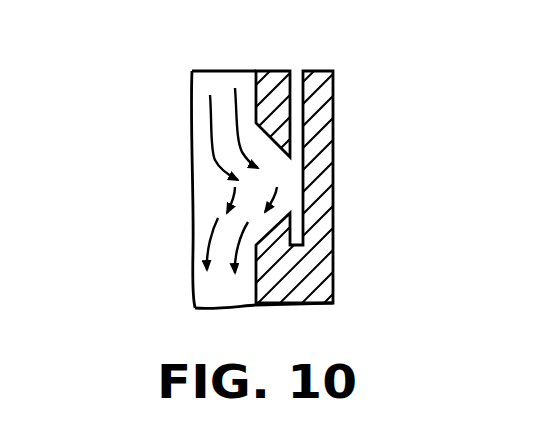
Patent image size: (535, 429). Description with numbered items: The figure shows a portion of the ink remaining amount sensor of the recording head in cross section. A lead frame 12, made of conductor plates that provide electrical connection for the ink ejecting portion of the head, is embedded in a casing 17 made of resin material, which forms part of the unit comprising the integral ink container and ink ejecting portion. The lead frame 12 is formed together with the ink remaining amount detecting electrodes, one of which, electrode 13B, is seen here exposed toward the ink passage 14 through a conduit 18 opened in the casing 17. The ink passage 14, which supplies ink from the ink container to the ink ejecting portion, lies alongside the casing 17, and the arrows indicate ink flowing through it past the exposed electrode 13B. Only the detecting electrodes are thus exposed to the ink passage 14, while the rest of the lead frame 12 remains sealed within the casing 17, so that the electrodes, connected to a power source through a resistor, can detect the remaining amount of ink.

The lead frame 12 is at (318, 72).
The ink passage 14 is at (222, 77).
The casing 17 is at (328, 148).
The conduit 18 is at (283, 202).
The electrode 13B is at (290, 172).